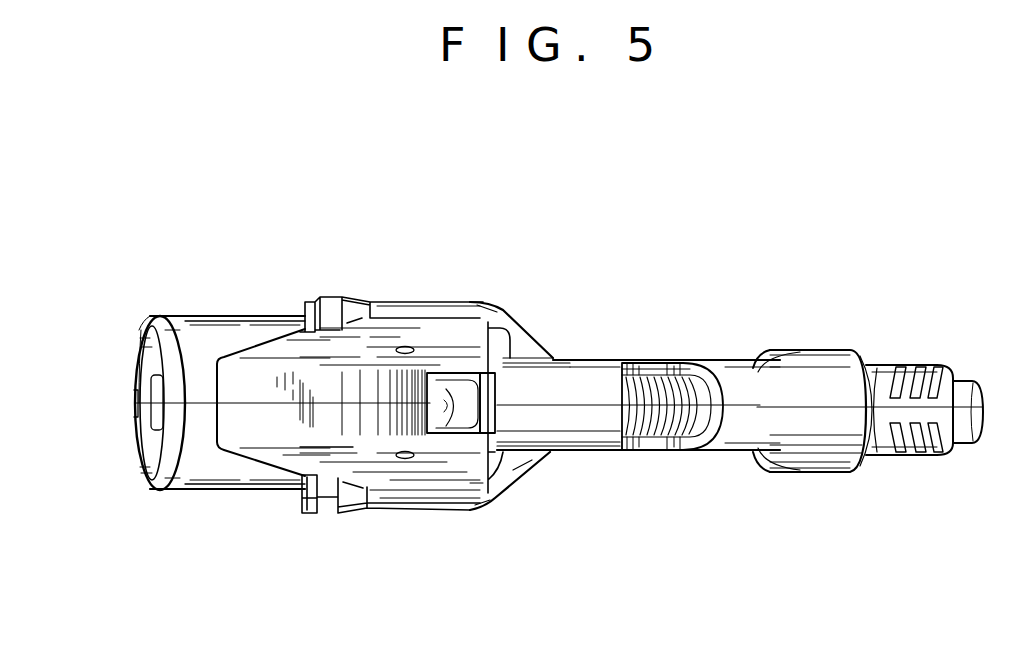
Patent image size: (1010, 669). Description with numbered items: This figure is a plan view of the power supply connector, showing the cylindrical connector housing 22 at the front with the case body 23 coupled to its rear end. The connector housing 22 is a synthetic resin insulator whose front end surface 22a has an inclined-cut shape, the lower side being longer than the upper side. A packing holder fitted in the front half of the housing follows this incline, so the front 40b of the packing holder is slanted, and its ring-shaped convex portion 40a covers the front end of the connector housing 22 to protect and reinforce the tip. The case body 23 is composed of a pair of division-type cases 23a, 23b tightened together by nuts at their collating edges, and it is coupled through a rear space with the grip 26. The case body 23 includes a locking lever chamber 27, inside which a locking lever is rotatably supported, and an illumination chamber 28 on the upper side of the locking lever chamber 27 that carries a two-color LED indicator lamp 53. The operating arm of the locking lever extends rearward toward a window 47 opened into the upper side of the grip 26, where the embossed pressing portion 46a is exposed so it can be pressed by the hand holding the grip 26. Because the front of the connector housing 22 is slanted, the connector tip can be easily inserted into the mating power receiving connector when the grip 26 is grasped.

The connector housing 22 is at (222, 495).
The front end surface 22a is at (176, 472).
The case body 23 is at (606, 548).
The division-type case 23a is at (538, 390).
The division-type case 23b is at (597, 450).
The grip 26 is at (773, 435).
The locking lever chamber 27 is at (428, 318).
The illumination chamber 28 is at (500, 383).
The ring-shaped convex portion 40a is at (167, 318).
The front of the packing holder 40b is at (148, 325).
The pressing portion 46a is at (657, 365).
The window 47 is at (690, 450).
The two-color indicator lamp 53 is at (441, 385).